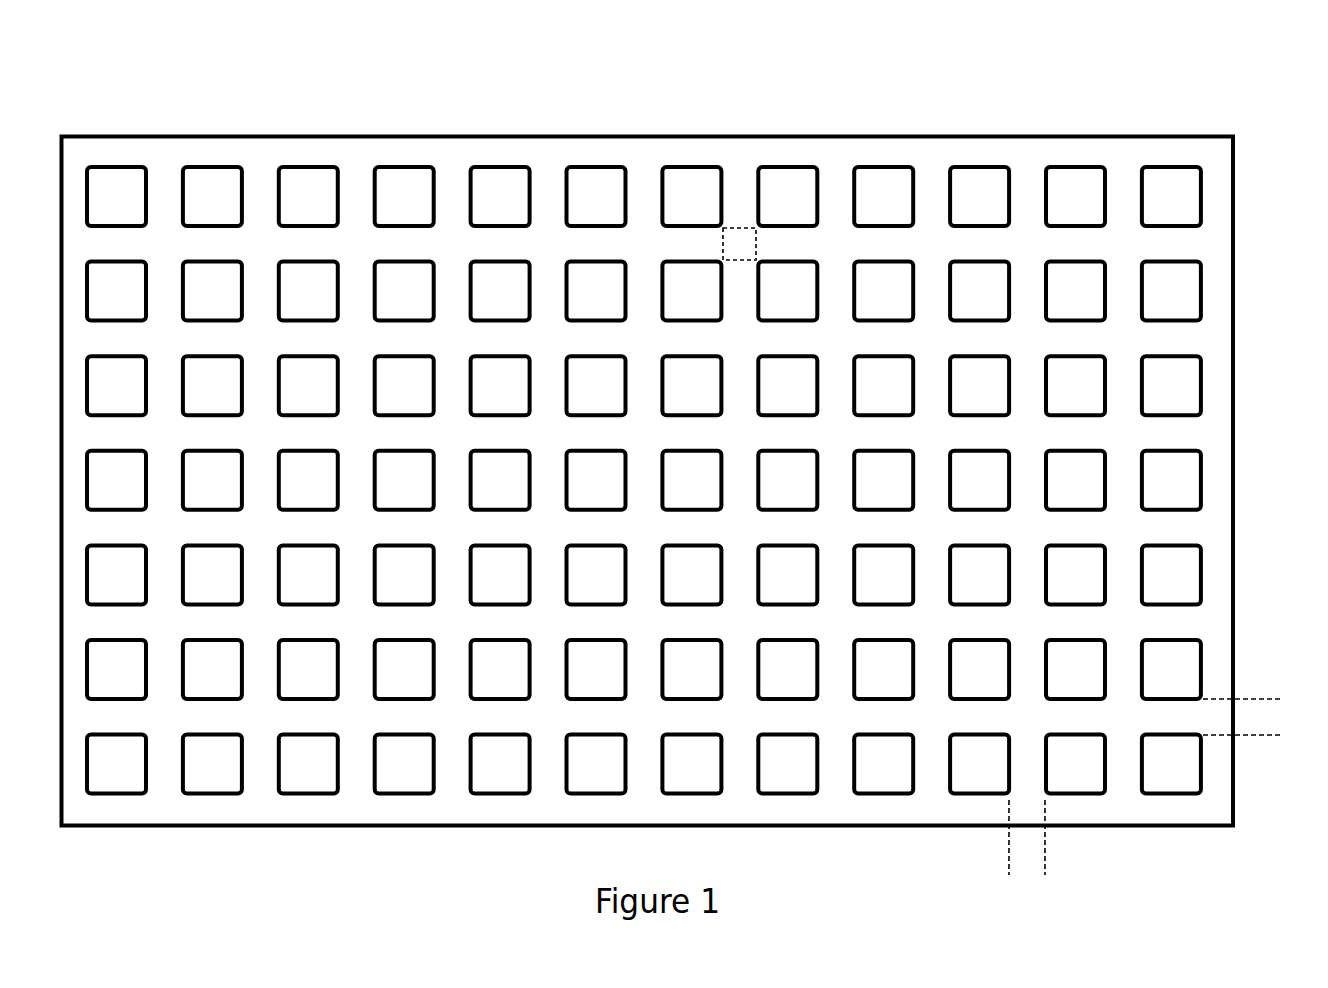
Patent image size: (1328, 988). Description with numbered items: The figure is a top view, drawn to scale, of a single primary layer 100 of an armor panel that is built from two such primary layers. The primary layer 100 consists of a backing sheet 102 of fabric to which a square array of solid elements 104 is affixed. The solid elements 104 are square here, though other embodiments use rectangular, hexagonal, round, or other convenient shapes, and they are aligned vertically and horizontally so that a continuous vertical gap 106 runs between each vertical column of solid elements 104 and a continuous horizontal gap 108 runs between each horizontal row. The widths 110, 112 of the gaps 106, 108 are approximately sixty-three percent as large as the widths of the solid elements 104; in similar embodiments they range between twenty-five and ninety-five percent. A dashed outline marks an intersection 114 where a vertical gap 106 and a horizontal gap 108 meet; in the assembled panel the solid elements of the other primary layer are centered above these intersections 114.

The primary layer 100 is at (302, 88).
The backing sheet 102 is at (600, 134).
The solid elements 104 is at (326, 208).
The vertical gap 106 is at (932, 160).
The horizontal gap 108 is at (1205, 525).
The width of the vertical gap 110 is at (978, 850).
The width of the horizontal gap 112 is at (1254, 765).
The intersection 114 is at (738, 245).